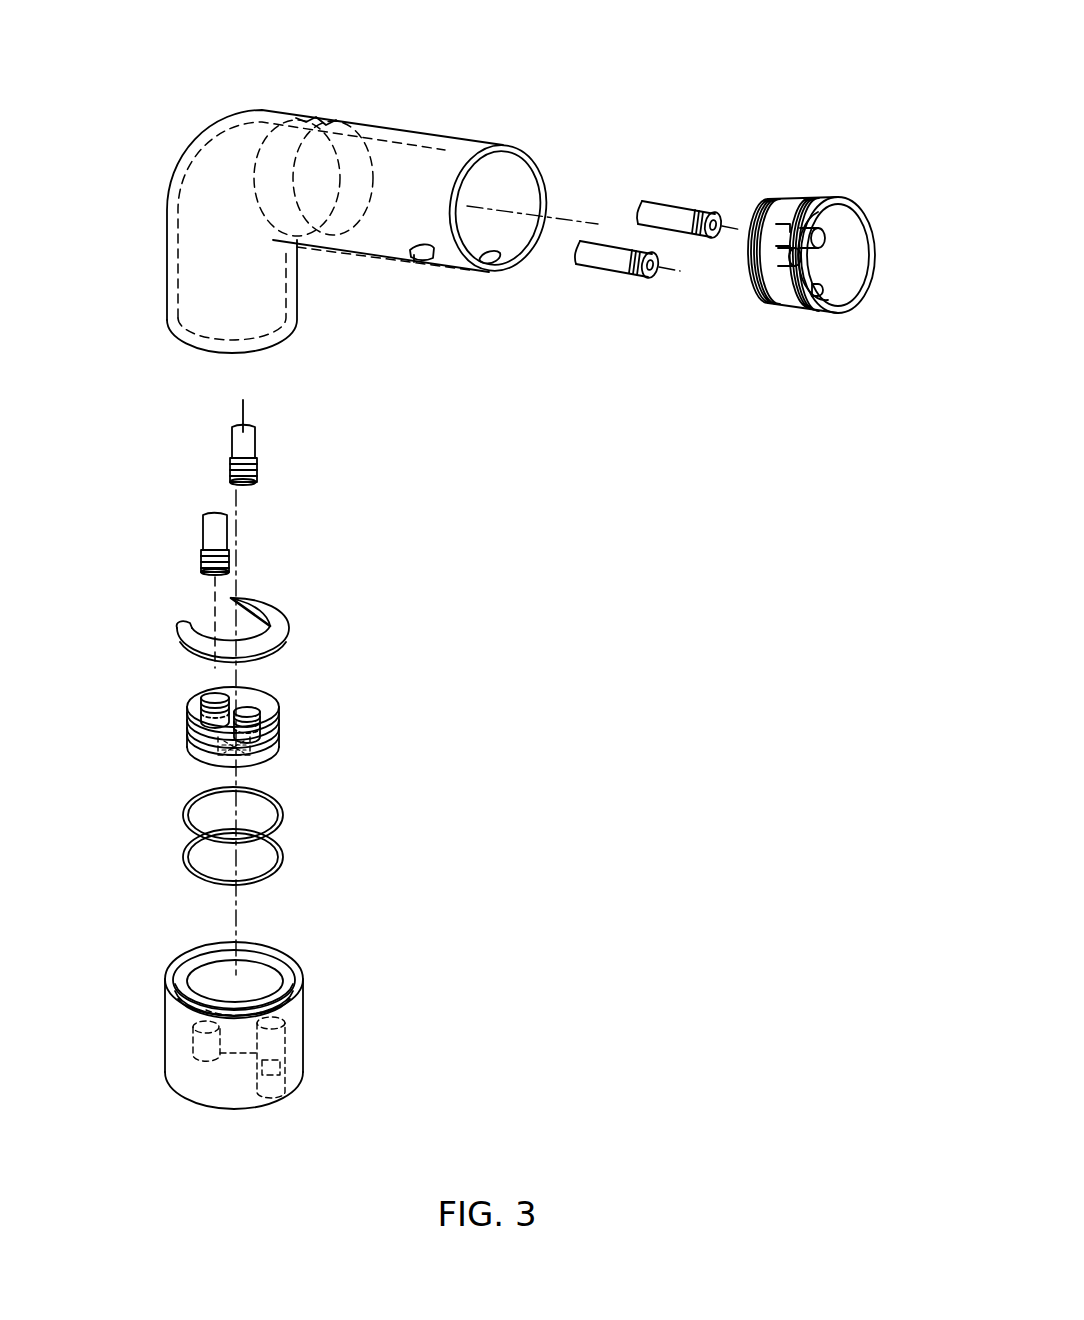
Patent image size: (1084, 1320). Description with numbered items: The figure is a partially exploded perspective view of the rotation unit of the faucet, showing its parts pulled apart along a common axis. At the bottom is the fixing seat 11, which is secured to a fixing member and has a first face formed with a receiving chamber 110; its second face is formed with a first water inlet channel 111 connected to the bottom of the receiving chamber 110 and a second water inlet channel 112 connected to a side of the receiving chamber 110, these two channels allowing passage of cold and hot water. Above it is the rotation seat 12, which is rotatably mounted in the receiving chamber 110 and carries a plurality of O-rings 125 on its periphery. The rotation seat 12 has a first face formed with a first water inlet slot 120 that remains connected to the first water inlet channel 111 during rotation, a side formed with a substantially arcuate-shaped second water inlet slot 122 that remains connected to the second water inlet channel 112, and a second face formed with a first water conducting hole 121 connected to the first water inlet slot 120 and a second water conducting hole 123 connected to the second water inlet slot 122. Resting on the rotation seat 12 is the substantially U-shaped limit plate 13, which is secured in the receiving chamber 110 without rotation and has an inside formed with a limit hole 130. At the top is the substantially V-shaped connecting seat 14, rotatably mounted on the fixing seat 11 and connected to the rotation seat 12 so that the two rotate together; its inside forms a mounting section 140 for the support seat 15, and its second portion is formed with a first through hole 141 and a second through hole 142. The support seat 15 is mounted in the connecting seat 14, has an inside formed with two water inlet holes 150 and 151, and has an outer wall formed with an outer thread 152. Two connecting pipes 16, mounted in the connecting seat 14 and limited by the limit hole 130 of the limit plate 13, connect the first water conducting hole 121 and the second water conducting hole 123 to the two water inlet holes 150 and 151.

The fixing seat 11 is at (155, 1027).
The receiving chamber 110 is at (255, 976).
The first water inlet channel 111 is at (210, 1058).
The second water inlet channel 112 is at (280, 1078).
The rotation seat 12 is at (167, 720).
The first water inlet slot 120 is at (260, 762).
The first water conducting hole 121 is at (202, 695).
The second water inlet slot 122 is at (280, 747).
The second water conducting hole 123 is at (250, 712).
The O-rings 125 is at (287, 852).
The limit plate 13 is at (157, 612).
The limit hole 130 is at (267, 607).
The connecting seat 14 is at (177, 173).
The mounting section 140 is at (303, 120).
The first through hole 141 is at (420, 262).
The second through hole 142 is at (490, 259).
The support seat 15 is at (820, 197).
The water inlet hole 150 is at (772, 253).
The water inlet hole 151 is at (824, 240).
The outer thread 152 is at (808, 310).
The connecting pipes 16 is at (612, 257).